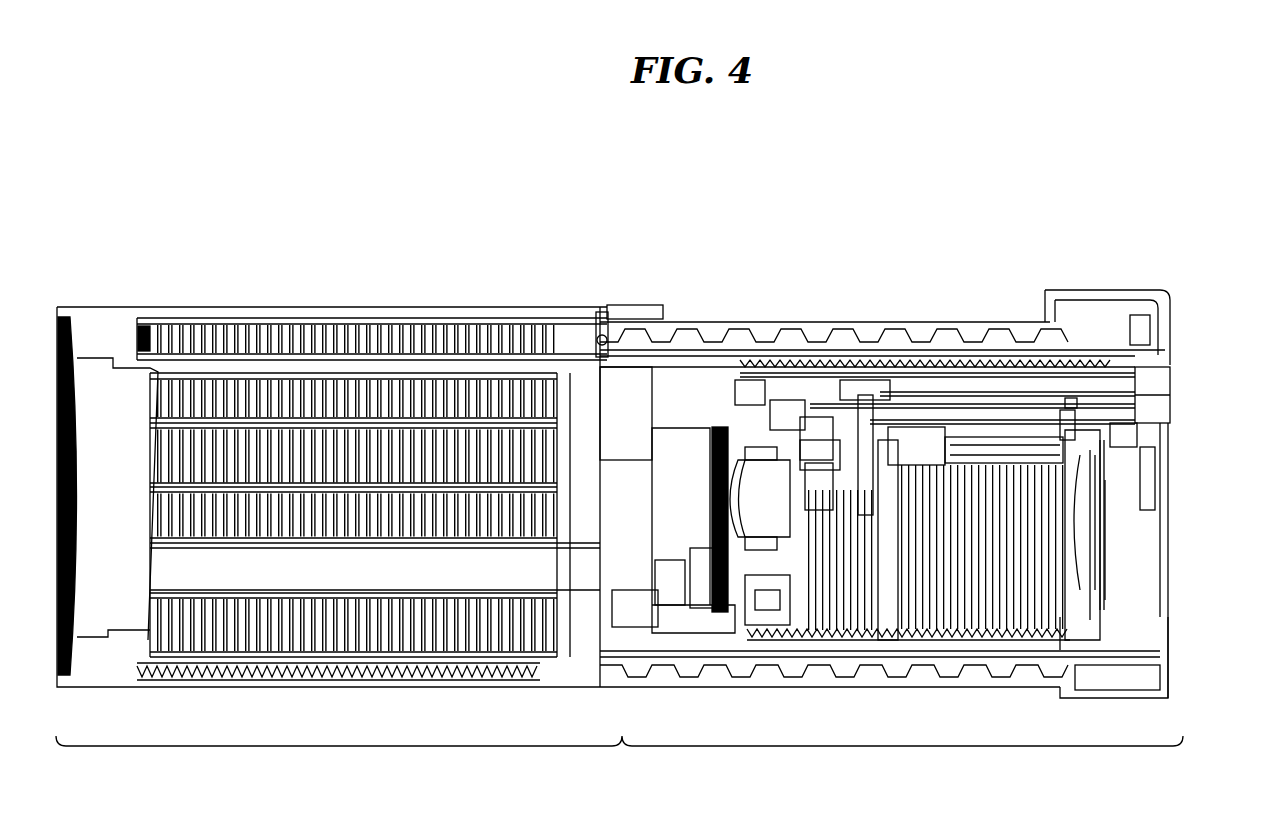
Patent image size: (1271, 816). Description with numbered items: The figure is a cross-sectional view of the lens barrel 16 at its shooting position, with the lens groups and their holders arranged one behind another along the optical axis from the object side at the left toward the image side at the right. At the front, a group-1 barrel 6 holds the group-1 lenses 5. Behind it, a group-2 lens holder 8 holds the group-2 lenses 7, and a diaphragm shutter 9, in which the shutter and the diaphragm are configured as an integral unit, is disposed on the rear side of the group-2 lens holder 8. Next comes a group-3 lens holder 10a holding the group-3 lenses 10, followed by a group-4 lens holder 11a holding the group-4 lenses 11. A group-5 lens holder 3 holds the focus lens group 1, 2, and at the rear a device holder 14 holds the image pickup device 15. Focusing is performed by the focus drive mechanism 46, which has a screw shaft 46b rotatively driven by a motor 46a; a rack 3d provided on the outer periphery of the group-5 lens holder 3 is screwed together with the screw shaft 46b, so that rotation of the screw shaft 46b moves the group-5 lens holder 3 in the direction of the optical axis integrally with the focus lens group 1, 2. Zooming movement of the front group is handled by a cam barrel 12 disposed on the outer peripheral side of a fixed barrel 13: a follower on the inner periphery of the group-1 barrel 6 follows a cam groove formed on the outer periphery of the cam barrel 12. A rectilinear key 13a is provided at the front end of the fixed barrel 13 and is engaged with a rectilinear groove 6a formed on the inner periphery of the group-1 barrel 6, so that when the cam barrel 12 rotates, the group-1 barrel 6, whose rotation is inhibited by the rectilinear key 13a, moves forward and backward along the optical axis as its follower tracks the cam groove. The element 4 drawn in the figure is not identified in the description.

The focus lens group 1 is at (1073, 520).
The focus lens group 2 is at (1087, 493).
The group-5 lens holder 3 is at (1083, 592).
The rack 3d is at (1072, 405).
The fourth lens unit 4 is at (1065, 430).
The group-1 lenses 5 is at (128, 603).
The group-1 barrel 6 is at (110, 325).
The rectilinear groove 6a is at (313, 325).
The group-2 lenses 7 is at (675, 460).
The group-2 lens holder 8 is at (677, 610).
The diaphragm shutter 9 is at (727, 393).
The group-3 lenses 10 is at (780, 473).
The group-3 lens holder 10a is at (765, 453).
The group-4 lenses 11 is at (882, 515).
The group-4 lens holder 11a is at (877, 610).
The cam barrel 12 is at (755, 662).
The fixed barrel 13 is at (822, 642).
The rectilinear key 13a is at (607, 315).
The device holder 14 is at (1170, 689).
The image pickup device 15 is at (1158, 472).
The lens barrel 16 is at (619, 540).
The focus drive mechanism 46 is at (1155, 378).
The motor 46a is at (1162, 405).
The screw shaft 46b is at (922, 400).